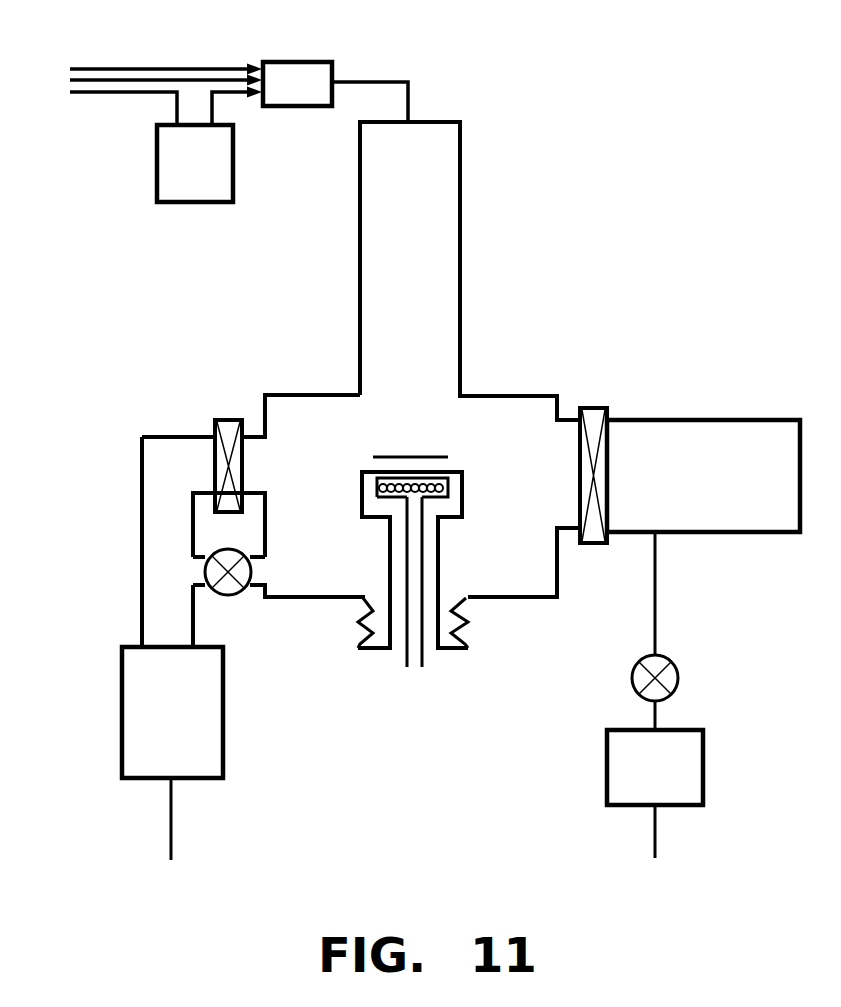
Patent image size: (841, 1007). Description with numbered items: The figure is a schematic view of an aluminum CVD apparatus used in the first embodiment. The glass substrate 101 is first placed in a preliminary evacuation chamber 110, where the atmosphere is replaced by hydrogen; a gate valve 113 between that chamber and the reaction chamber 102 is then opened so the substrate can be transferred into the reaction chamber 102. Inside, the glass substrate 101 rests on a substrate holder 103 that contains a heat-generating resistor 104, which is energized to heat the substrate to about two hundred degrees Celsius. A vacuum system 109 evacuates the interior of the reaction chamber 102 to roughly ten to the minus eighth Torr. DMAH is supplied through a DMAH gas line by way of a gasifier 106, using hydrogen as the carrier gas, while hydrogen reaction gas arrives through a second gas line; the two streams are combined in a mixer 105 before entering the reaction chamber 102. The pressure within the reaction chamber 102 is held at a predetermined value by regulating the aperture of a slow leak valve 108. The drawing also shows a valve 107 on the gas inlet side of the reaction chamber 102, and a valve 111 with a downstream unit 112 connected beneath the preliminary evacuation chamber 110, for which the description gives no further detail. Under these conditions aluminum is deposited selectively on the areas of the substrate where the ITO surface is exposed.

The glass substrate 101 is at (428, 457).
The reaction chamber 102 is at (528, 390).
The substrate holder 103 is at (362, 483).
The heat-generating resistor 104 is at (455, 493).
The mixer 105 is at (303, 68).
The gasifier 106 is at (197, 192).
The gas inlet valve 107 is at (228, 420).
The slow leak valve 108 is at (238, 595).
The vacuum system 109 is at (225, 743).
The preliminary evacuation chamber 110 is at (707, 418).
The exhaust valve 111 is at (677, 668).
The exhaust unit 112 is at (705, 770).
The gate valve 113 is at (595, 405).